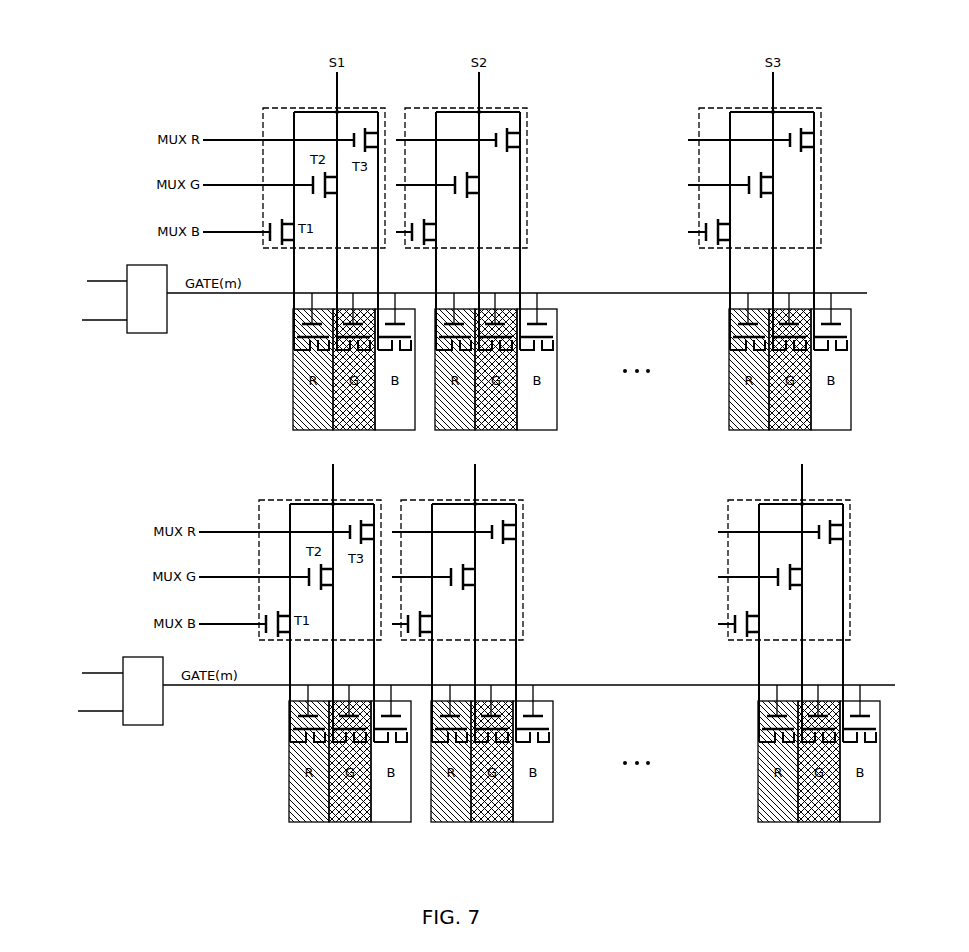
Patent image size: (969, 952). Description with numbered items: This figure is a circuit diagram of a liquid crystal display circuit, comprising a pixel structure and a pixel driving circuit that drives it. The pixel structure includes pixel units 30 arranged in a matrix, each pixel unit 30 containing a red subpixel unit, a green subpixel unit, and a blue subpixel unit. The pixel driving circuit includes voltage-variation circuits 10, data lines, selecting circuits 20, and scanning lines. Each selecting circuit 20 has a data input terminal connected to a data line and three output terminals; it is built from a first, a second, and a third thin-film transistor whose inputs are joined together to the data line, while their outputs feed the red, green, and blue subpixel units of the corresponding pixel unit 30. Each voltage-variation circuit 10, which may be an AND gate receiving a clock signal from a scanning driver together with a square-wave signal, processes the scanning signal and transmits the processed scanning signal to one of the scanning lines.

The voltage-variation circuit 10 is at (147, 333).
The selecting circuit 20 is at (798, 108).
The pixel unit 30 is at (803, 868).